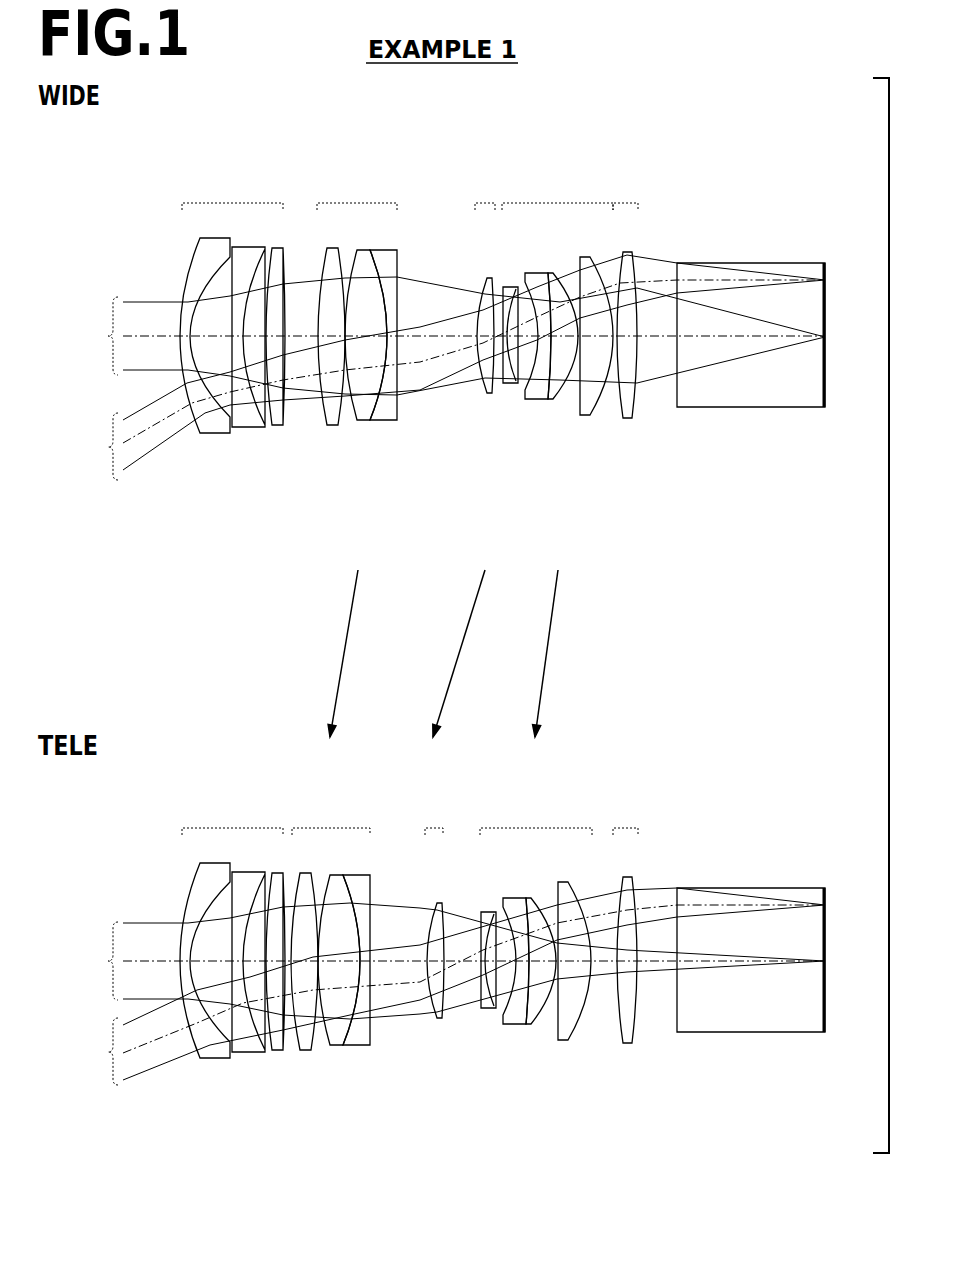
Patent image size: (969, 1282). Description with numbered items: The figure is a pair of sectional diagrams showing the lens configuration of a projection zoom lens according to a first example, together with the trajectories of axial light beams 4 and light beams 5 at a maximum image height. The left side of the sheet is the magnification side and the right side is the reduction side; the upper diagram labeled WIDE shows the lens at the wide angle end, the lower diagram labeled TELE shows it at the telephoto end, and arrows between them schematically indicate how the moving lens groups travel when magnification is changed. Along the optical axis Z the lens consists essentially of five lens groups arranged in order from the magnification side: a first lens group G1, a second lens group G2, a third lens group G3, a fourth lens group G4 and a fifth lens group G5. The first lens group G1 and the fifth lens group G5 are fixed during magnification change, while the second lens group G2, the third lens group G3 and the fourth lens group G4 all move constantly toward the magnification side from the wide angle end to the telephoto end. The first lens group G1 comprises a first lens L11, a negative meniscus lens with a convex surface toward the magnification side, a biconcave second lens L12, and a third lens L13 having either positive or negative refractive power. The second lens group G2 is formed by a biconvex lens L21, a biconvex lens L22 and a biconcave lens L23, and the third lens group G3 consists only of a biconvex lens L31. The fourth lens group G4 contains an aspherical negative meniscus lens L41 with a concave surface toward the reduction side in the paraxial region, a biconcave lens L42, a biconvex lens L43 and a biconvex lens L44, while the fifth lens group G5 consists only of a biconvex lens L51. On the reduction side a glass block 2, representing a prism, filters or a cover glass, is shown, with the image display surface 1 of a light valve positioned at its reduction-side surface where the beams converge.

The image display surface 1 is at (826, 363).
The glass block 2 is at (788, 407).
The axial light beams 4 is at (458, 648).
The light beams at a maximum image height 5 is at (458, 670).
The optical axis Z is at (133, 332).
The first lens group G1 is at (232, 504).
The second lens group G2 is at (344, 504).
The third lens group G3 is at (459, 504).
The fourth lens group G4 is at (546, 504).
The fifth lens group G5 is at (624, 504).
The first lens L11 is at (217, 433).
The second lens L12 is at (248, 427).
The third lens L13 is at (278, 425).
The biconvex lens L21 is at (330, 425).
The biconvex lens L22 is at (357, 420).
The biconcave lens L23 is at (382, 420).
The biconvex lens L31 is at (485, 393).
The aspherical lens L41 is at (507, 383).
The biconcave lens L42 is at (532, 399).
The biconvex lens L43 is at (553, 399).
The biconvex lens L44 is at (585, 415).
The biconvex lens L51 is at (623, 418).